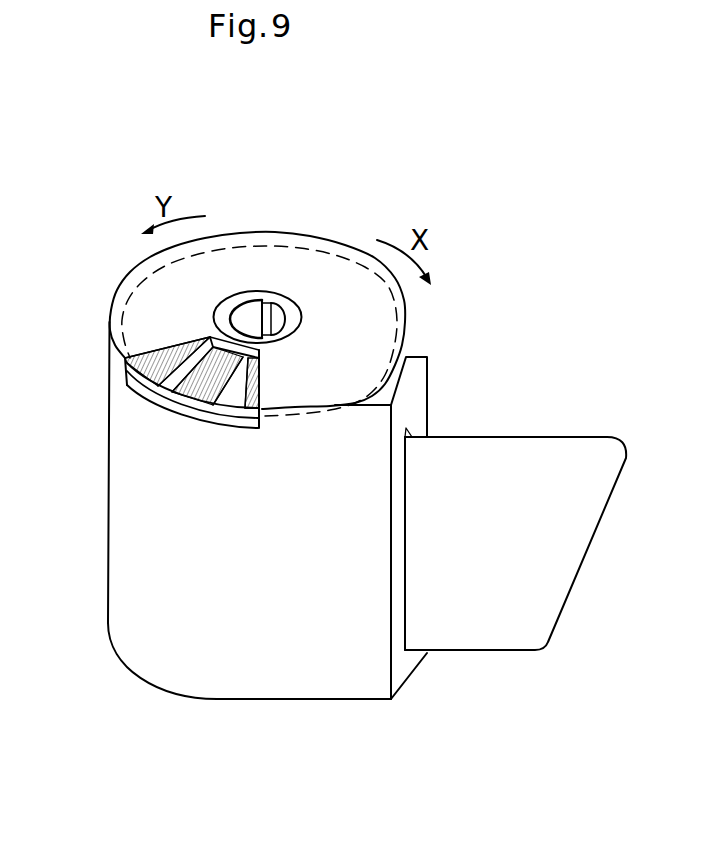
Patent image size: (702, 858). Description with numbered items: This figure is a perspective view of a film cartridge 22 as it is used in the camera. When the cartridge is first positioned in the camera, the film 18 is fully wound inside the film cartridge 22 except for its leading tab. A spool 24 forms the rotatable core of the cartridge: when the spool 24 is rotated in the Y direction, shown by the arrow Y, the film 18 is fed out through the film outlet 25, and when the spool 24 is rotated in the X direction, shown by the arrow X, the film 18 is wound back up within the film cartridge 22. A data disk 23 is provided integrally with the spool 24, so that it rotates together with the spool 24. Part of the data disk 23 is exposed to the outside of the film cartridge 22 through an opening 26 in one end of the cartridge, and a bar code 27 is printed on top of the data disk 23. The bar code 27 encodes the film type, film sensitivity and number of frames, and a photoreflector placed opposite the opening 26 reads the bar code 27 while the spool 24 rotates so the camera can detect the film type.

The film 18 is at (558, 455).
The film cartridge 22 is at (130, 577).
The data disk 23 is at (232, 412).
The spool 24 is at (293, 298).
The film outlet 25 is at (403, 608).
The opening 26 is at (157, 348).
The bar code 27 is at (178, 386).